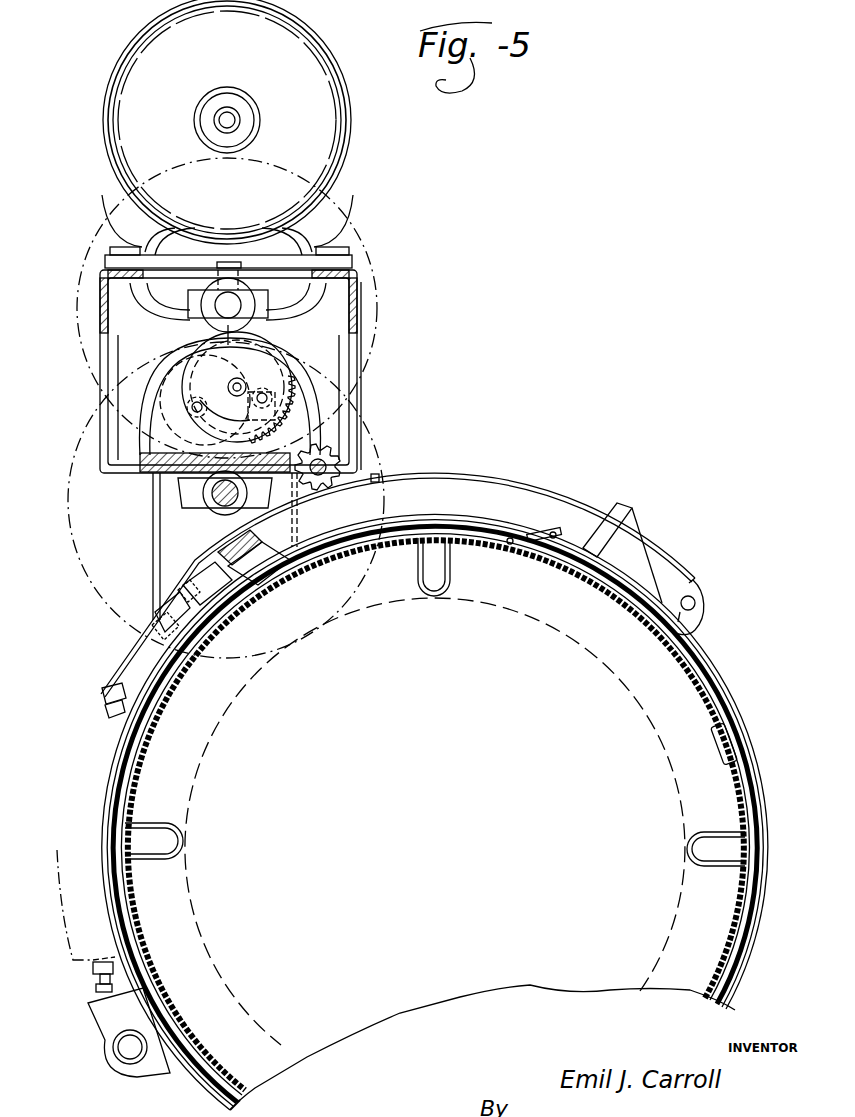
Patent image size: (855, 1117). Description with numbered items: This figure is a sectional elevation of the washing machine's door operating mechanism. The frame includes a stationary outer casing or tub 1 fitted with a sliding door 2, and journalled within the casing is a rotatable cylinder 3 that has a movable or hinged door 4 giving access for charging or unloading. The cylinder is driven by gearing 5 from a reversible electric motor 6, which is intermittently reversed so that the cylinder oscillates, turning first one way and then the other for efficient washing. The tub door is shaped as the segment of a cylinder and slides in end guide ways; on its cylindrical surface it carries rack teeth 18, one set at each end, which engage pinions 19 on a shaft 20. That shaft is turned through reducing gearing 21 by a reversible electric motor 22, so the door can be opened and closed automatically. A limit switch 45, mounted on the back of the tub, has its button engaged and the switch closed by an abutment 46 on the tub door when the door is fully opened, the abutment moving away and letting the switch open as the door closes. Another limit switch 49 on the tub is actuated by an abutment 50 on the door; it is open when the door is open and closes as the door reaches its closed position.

The stationary outer casing or tub 1 is at (112, 825).
The sliding door 2 is at (489, 525).
The rotatable cylinder 3 is at (133, 770).
The hinged door 4 is at (631, 603).
The gearing 5 is at (377, 281).
The reversible electric motor 6 is at (308, 116).
The rack teeth 18 is at (379, 478).
The pinions 19 is at (323, 466).
The shaft 20 is at (330, 455).
The reducing gearing 21 is at (262, 381).
The reversible electric motor 22 is at (268, 440).
The limit switch 45 is at (108, 1012).
The abutment 46 is at (162, 605).
The limit switch 49 is at (224, 552).
The abutment 50 is at (192, 583).